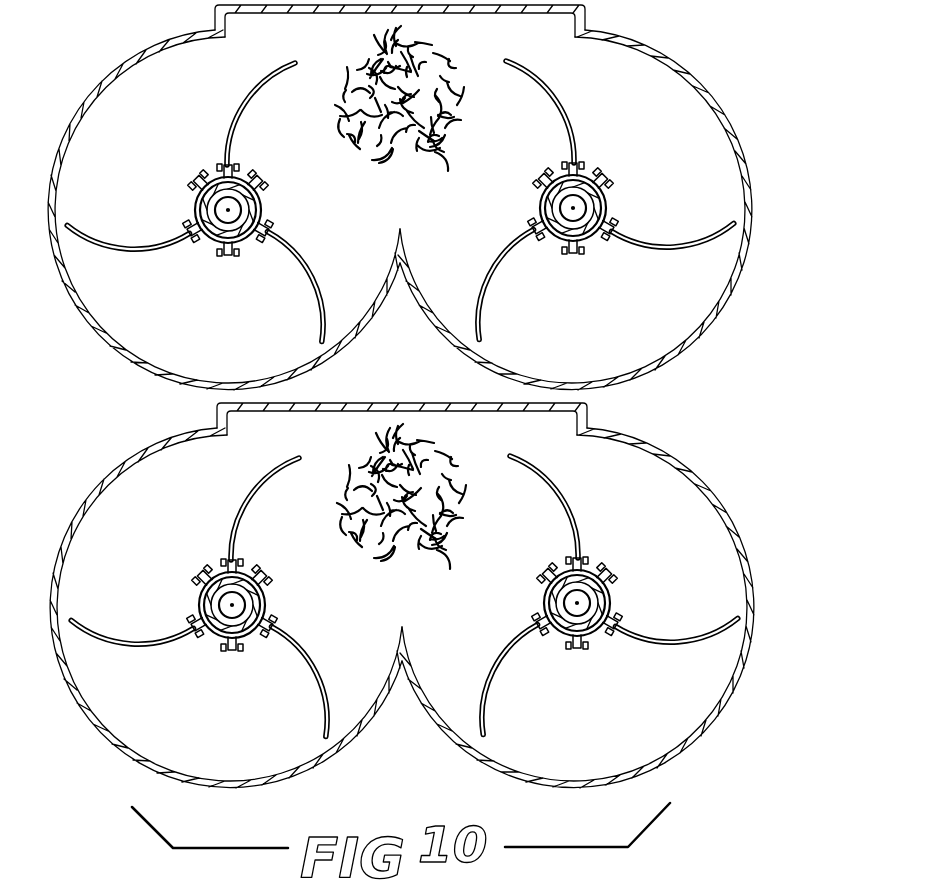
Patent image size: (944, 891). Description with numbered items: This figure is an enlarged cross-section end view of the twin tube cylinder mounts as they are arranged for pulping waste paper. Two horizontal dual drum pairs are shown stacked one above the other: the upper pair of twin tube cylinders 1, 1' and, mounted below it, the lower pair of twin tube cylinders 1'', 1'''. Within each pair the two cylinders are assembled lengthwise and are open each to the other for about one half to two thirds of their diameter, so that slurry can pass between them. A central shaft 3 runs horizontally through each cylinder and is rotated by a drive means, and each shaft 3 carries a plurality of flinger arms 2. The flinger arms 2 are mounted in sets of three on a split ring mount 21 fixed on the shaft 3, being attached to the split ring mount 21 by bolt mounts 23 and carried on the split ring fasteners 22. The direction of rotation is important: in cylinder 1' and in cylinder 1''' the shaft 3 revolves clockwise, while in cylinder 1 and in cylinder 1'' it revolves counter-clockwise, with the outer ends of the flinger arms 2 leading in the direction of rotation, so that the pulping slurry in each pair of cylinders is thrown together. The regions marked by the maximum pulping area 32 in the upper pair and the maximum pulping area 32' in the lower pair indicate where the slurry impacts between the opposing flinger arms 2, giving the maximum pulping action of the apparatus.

The twin tube cylinder 1 is at (575, 206).
The twin tube cylinder 1' is at (224, 207).
The twin tube cylinder 1'' is at (577, 600).
The twin tube cylinder 1''' is at (226, 607).
The flinger arm 2 is at (274, 78).
The central shaft 3 is at (226, 204).
The split ring mount 21 is at (247, 240).
The split ring fastener 22 is at (193, 185).
The bolt mount 23 is at (235, 165).
The maximum pulping area 32 is at (423, 96).
The maximum pulping area 32' is at (426, 494).